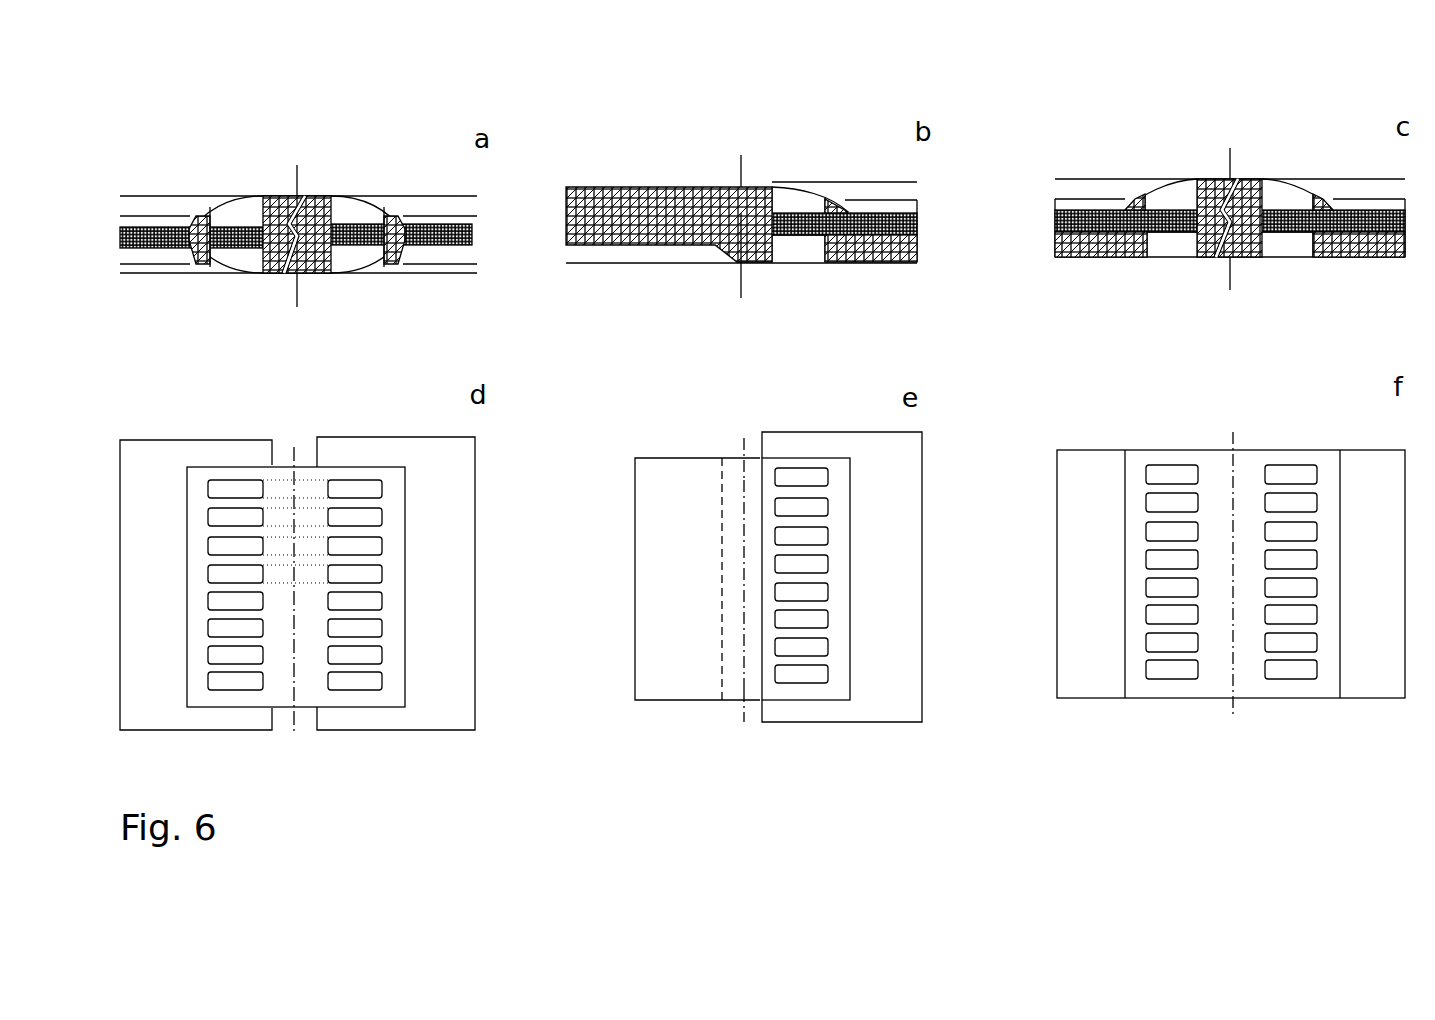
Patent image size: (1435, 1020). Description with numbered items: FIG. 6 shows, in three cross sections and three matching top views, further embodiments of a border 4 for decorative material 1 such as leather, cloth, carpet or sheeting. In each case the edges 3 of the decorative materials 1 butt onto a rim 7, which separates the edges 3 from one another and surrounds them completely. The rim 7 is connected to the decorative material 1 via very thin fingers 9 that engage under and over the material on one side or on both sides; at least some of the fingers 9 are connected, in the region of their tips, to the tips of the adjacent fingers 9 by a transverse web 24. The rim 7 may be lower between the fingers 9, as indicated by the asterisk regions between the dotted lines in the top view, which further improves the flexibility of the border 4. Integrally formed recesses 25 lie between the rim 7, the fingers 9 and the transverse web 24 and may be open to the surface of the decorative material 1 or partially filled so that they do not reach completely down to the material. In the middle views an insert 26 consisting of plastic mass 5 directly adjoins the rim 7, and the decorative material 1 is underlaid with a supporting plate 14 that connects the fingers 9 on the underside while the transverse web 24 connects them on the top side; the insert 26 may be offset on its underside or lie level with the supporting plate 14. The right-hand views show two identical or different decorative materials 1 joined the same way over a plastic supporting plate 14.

The decorative material 1 is at (143, 250).
The edge 3 is at (283, 217).
The border 4 is at (292, 145).
The plastic mass 5 is at (668, 197).
The rim 7 is at (286, 262).
The fingers 9 is at (233, 197).
The supporting plate 14 is at (852, 258).
The transverse web 24 is at (198, 217).
The recesses 25 is at (363, 215).
The insert 26 is at (598, 195).